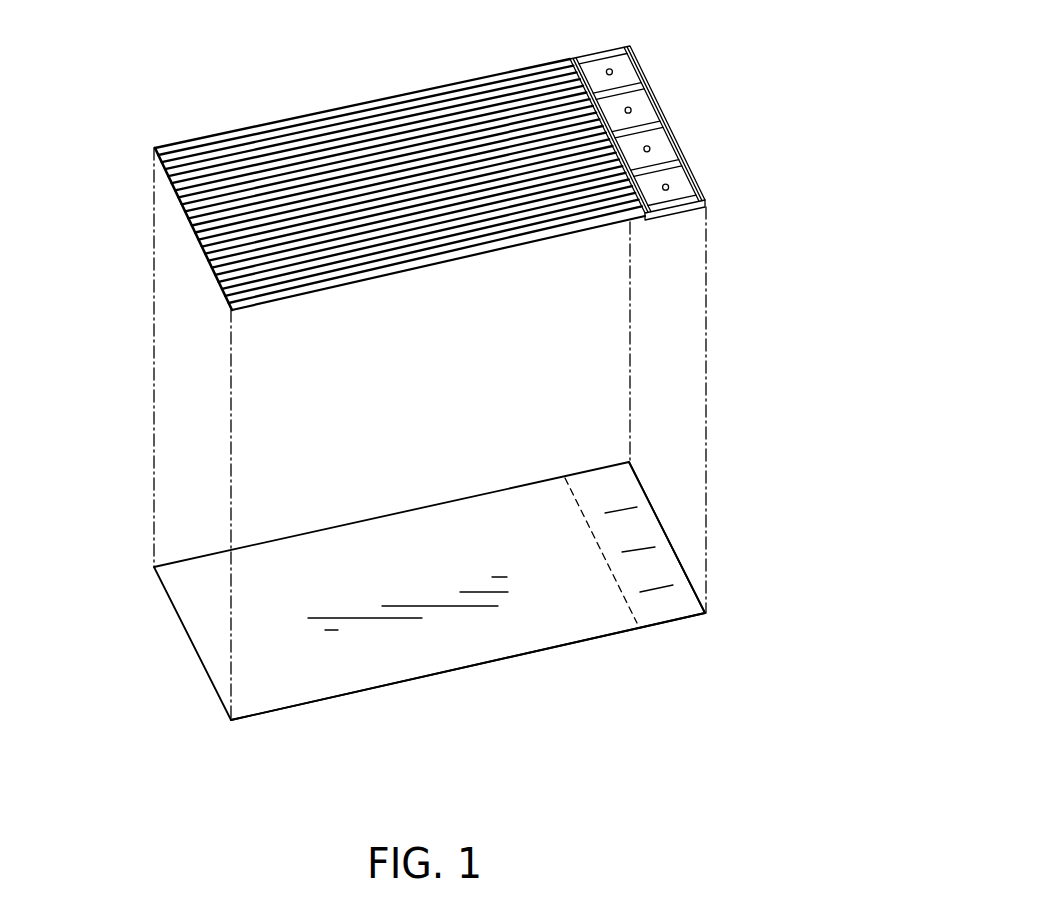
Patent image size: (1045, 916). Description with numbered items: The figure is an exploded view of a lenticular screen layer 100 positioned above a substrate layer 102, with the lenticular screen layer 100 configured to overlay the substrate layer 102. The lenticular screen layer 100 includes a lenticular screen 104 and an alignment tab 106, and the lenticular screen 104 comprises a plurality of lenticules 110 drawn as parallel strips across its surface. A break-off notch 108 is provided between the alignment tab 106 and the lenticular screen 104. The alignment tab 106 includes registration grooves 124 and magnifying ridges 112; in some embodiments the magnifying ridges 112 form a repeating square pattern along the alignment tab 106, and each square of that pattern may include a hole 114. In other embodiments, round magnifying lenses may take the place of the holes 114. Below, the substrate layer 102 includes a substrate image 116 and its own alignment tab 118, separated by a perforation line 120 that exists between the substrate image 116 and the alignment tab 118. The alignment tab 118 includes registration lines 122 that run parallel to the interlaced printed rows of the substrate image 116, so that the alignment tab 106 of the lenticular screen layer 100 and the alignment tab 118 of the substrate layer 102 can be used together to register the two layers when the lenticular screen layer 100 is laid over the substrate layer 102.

The lenticular screen layer 100 is at (170, 212).
The substrate layer 102 is at (170, 627).
The lenticular screen 104 is at (533, 247).
The alignment tab 106 is at (678, 215).
The break-off notch 108 is at (625, 192).
The lenticules 110 is at (385, 113).
The magnifying ridges 112 is at (658, 100).
The hole 114 is at (612, 72).
The substrate image 116 is at (447, 676).
The alignment tab 118 is at (673, 620).
The perforation line 120 is at (632, 612).
The registration lines 122 is at (664, 585).
The registration grooves 124 is at (677, 167).